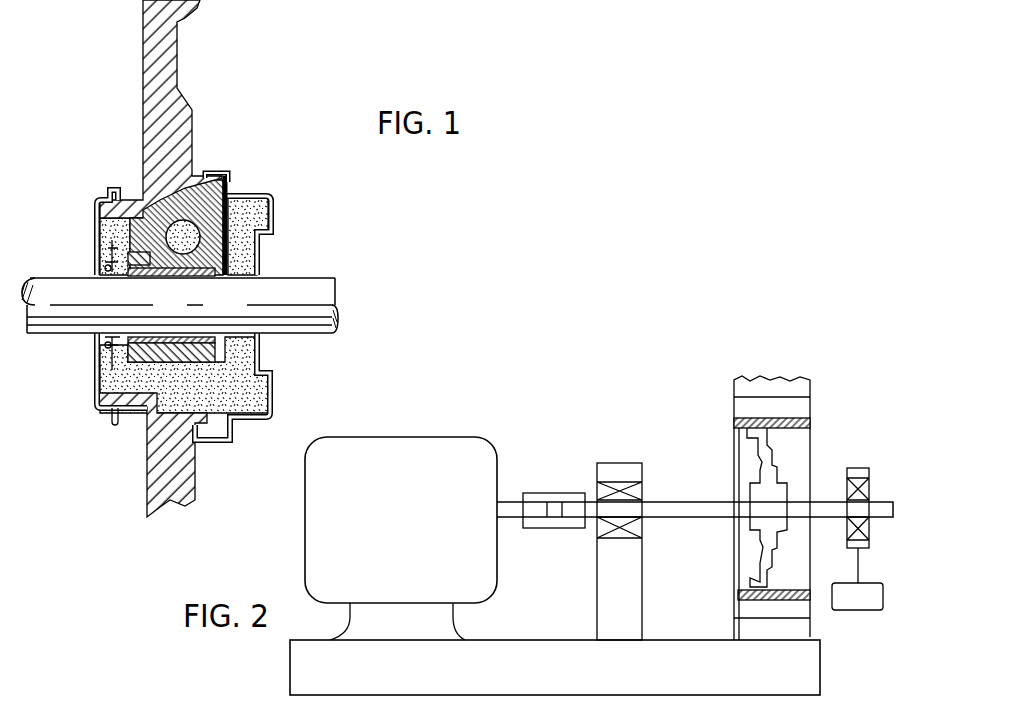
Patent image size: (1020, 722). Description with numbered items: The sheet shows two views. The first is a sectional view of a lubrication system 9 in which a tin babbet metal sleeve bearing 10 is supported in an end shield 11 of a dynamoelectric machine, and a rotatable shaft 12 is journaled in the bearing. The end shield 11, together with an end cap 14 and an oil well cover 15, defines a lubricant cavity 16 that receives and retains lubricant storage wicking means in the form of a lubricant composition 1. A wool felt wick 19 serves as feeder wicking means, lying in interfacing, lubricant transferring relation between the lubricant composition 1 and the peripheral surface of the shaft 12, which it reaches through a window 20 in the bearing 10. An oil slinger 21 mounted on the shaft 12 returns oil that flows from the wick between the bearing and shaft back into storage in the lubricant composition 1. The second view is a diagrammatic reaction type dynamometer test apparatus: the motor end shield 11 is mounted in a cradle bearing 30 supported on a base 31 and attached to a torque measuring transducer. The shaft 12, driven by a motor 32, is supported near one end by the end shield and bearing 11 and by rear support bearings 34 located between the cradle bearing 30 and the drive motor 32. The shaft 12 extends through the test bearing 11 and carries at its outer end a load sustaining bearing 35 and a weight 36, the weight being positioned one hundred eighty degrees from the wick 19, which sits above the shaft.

In FIG. 1, the lubricant composition 1 is at (265, 195).
In FIG. 1, the lubrication system 9 is at (183, 232).
In FIG. 1, the sleeve bearing 10 is at (195, 278).
In FIG. 1, the end shield 11 is at (170, 80).
In FIG. 2, the end shield 11 is at (780, 464).
In FIG. 1, the shaft 12 is at (298, 293).
In FIG. 2, the shaft 12 is at (670, 508).
In FIG. 1, the end cap 14 is at (98, 393).
In FIG. 1, the oil well cover 15 is at (277, 401).
In FIG. 1, the lubricant cavity 16 is at (133, 410).
In FIG. 1, the wool felt wick 19 is at (222, 176).
In FIG. 1, the window 20 is at (157, 278).
In FIG. 1, the oil slinger 21 is at (108, 260).
In FIG. 2, the cradle bearing 30 is at (812, 508).
In FIG. 2, the base 31 is at (575, 672).
In FIG. 2, the motor 32 is at (420, 524).
In FIG. 2, the rear support bearings 34 is at (559, 489).
In FIG. 2, the load sustaining bearing 35 is at (869, 478).
In FIG. 2, the weight 36 is at (850, 612).